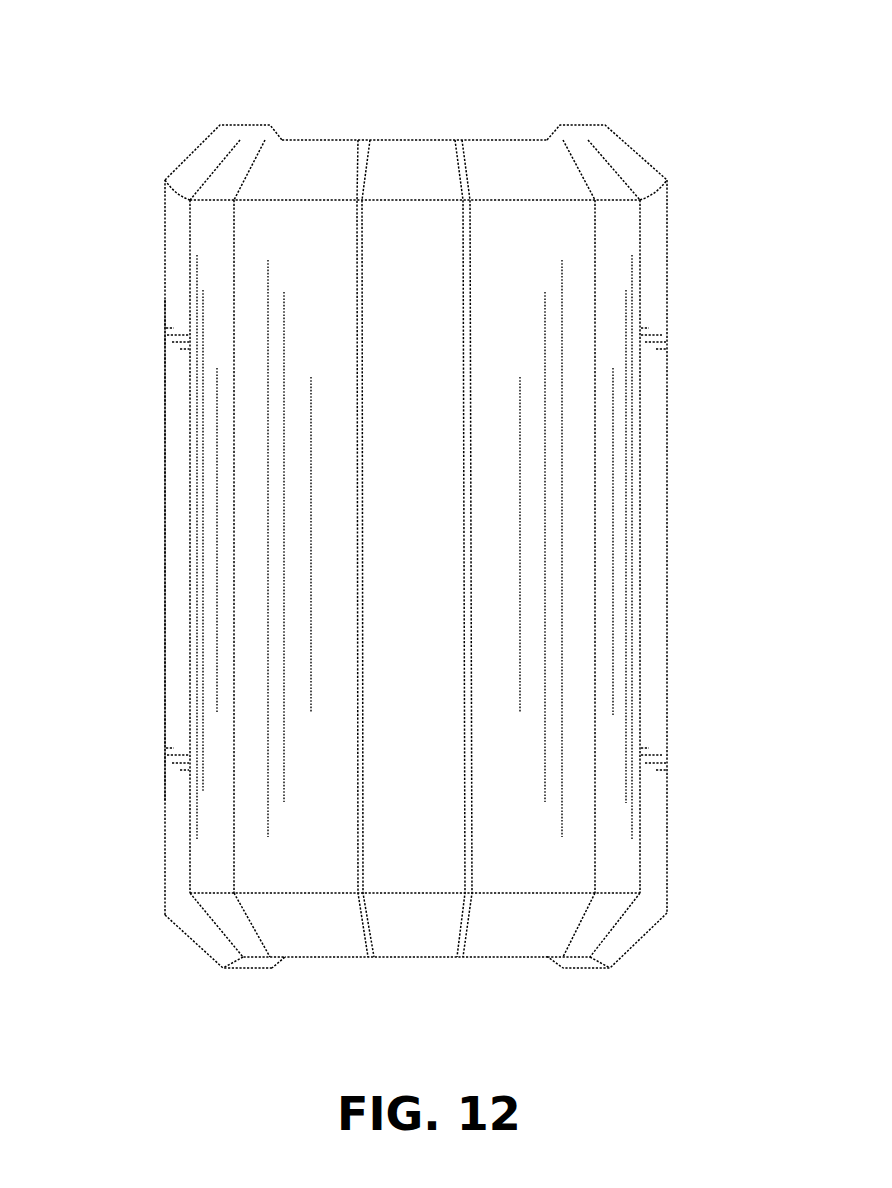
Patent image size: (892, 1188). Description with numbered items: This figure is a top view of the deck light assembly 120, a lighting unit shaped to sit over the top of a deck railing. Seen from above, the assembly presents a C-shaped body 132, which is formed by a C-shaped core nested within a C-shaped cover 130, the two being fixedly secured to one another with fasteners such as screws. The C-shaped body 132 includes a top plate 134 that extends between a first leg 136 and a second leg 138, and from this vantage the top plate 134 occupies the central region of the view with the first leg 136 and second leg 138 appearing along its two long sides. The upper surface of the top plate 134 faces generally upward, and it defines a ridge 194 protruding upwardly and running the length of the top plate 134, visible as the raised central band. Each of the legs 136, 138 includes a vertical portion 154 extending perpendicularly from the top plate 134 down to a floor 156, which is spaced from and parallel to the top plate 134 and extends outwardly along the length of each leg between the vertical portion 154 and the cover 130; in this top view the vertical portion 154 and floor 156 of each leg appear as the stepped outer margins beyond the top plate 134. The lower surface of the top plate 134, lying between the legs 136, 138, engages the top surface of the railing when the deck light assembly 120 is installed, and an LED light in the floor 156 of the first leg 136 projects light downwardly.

The deck light assembly 120 is at (518, 70).
The C-shaped cover 130 is at (598, 168).
The C-shaped body 132 is at (163, 177).
The top plate 134 is at (300, 270).
The first leg 136 is at (655, 530).
The second leg 138 is at (175, 530).
The vertical portion 154 is at (277, 960).
The floor 156 is at (250, 968).
The ridge 194 is at (413, 220).